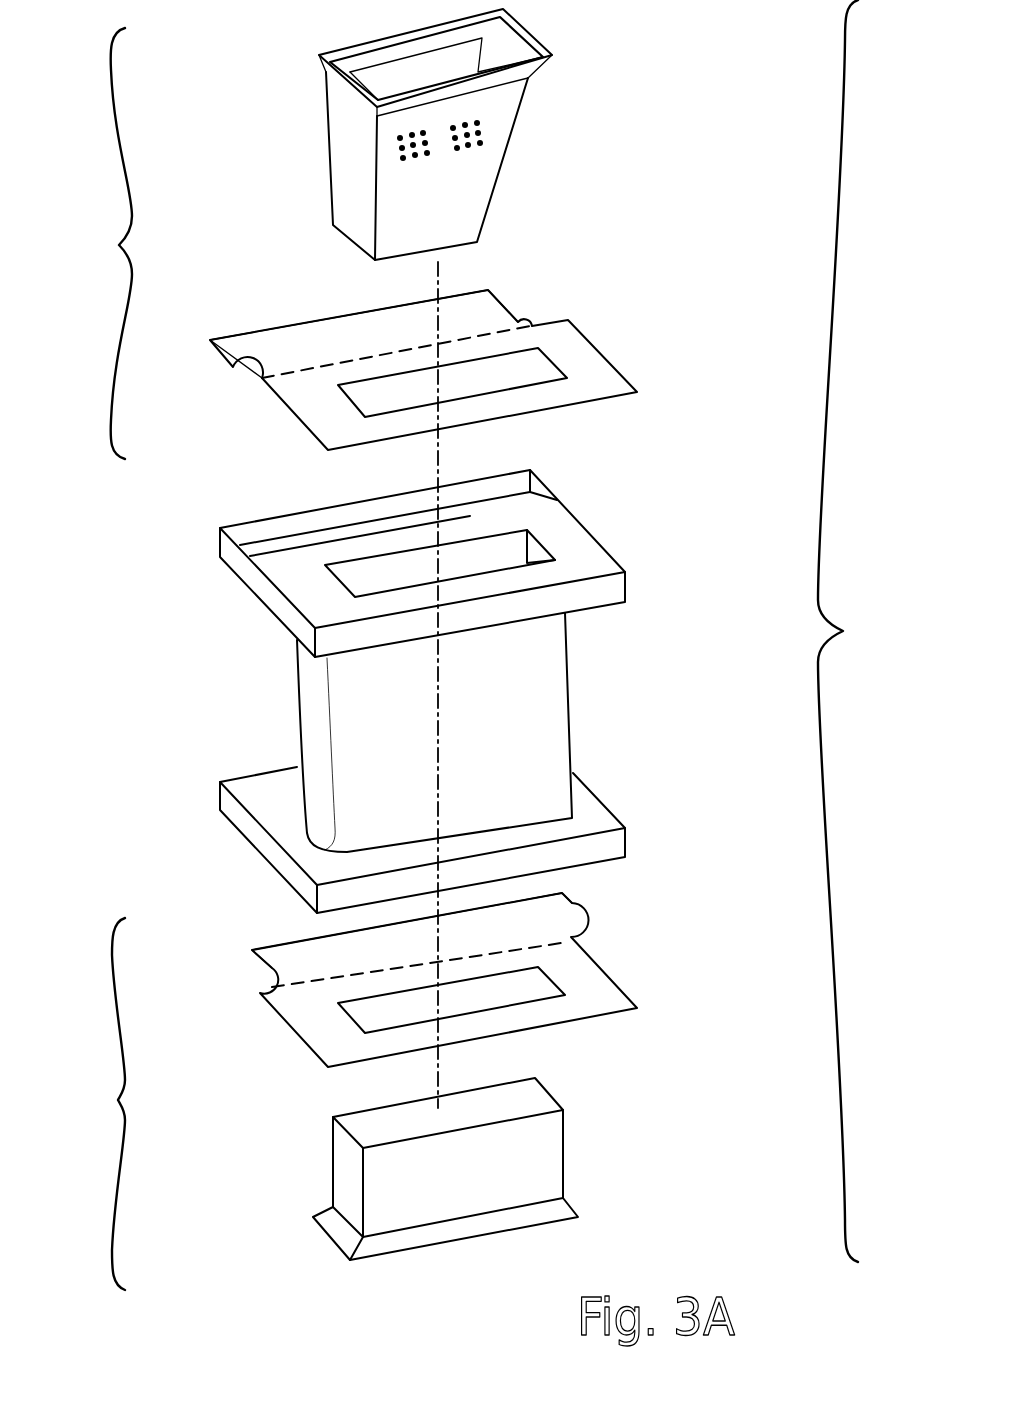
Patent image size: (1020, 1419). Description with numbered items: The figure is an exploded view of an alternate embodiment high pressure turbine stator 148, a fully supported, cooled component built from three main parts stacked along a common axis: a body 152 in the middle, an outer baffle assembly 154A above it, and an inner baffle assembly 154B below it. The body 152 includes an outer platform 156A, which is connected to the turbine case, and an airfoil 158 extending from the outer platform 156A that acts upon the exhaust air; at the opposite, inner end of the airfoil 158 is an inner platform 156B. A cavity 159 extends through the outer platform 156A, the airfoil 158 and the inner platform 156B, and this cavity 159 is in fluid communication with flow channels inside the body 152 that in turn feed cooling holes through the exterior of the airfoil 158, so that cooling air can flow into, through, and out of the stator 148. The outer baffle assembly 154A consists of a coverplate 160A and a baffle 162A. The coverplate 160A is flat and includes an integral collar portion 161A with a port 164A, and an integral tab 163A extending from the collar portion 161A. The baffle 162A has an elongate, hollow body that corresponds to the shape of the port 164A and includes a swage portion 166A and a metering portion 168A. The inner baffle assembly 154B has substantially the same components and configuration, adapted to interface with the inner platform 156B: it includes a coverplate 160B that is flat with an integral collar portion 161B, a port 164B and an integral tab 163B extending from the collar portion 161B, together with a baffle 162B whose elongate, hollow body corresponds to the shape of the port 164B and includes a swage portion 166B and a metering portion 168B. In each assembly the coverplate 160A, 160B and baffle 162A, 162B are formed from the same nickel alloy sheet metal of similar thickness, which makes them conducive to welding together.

The HPT stator 148 is at (854, 631).
The body 152 is at (457, 691).
The outer baffle assembly 154A is at (88, 243).
The inner baffle assembly 154B is at (91, 1104).
The outer platform 156A is at (476, 563).
The inner platform 156B is at (605, 800).
The airfoil 158 is at (300, 737).
The cavity 159 is at (510, 532).
The coverplate 160A is at (483, 355).
The coverplate 160B is at (499, 978).
The collar portion 161A is at (543, 393).
The collar portion 161B is at (547, 1012).
The tab 163A is at (512, 308).
The tab 163B is at (577, 903).
The port 164A is at (458, 395).
The port 164B is at (453, 983).
The baffle 162A is at (507, 134).
The baffle 162B is at (515, 1169).
The swage portion 166A is at (550, 58).
The swage portion 166B is at (567, 1203).
The metering portion 168A is at (490, 200).
The metering portion 168B is at (563, 1157).